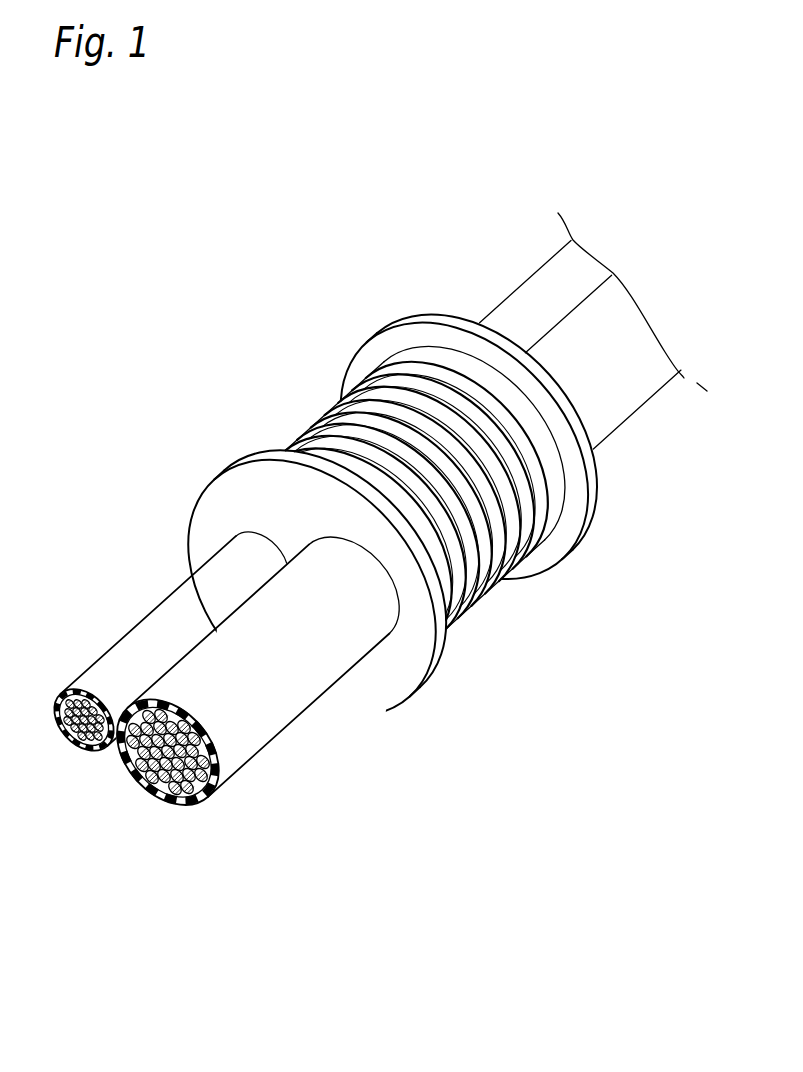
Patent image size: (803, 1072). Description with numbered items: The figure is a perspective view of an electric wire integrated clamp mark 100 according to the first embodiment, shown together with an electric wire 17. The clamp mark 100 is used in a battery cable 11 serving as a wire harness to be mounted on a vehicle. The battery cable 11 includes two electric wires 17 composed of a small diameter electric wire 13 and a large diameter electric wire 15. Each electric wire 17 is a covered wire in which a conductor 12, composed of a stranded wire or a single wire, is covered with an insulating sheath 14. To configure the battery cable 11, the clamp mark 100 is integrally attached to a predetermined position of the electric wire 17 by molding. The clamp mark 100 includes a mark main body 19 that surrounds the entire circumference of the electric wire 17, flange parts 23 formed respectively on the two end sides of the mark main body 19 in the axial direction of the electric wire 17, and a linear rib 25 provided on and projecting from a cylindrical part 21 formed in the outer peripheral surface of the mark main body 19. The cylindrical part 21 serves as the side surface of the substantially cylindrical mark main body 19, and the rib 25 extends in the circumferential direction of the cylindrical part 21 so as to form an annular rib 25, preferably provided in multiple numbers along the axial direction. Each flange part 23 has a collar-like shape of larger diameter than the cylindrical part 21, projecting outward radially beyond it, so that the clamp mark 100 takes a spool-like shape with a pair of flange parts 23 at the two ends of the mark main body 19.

The battery cable 11 is at (602, 128).
The electric wire integrated clamp mark 100 is at (433, 297).
The electric wire 17 is at (657, 174).
The small diameter electric wire 13 is at (543, 300).
The large diameter electric wire 15 is at (615, 328).
The mark main body 19 is at (308, 435).
The cylindrical part 21 is at (422, 407).
The rib 25 is at (392, 387).
The flange part 23 is at (590, 523).
The conductor 12 is at (155, 797).
The insulating sheath 14 is at (242, 753).